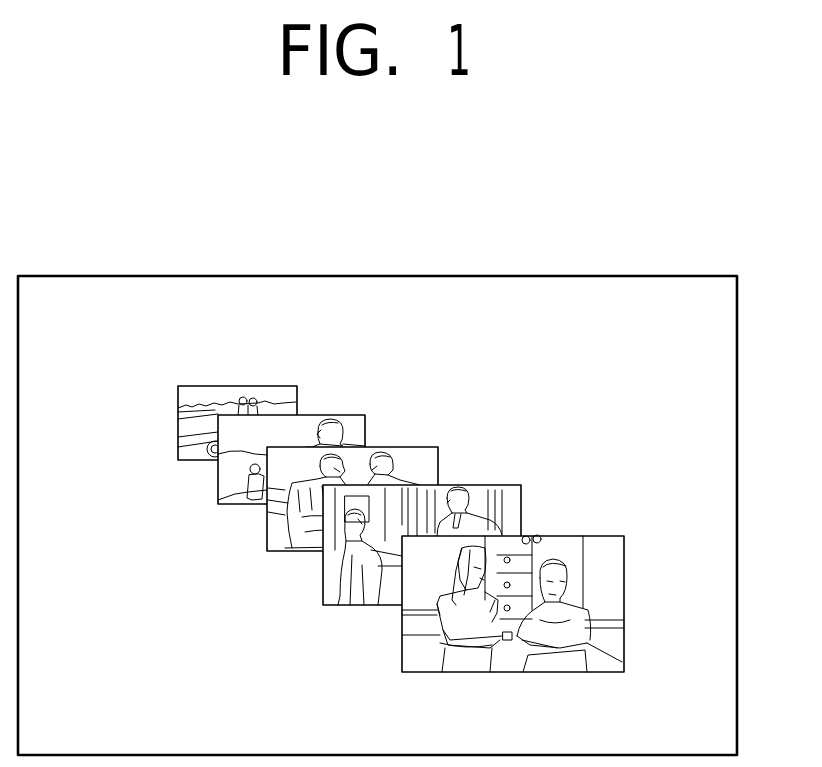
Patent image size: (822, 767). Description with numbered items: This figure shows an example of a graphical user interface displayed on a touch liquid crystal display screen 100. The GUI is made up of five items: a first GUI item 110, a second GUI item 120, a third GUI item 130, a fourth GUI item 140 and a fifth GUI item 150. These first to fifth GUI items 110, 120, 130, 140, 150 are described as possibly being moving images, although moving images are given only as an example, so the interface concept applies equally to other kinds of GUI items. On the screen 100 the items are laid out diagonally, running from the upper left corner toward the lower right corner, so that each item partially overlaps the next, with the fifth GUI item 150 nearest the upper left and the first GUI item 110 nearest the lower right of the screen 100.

The touch liquid crystal display (LCD) screen 100 is at (603, 276).
The first GUI item 110 is at (624, 536).
The second GUI item 120 is at (521, 485).
The third GUI item 130 is at (438, 447).
The fourth GUI item 140 is at (365, 415).
The fifth GUI item 150 is at (297, 386).